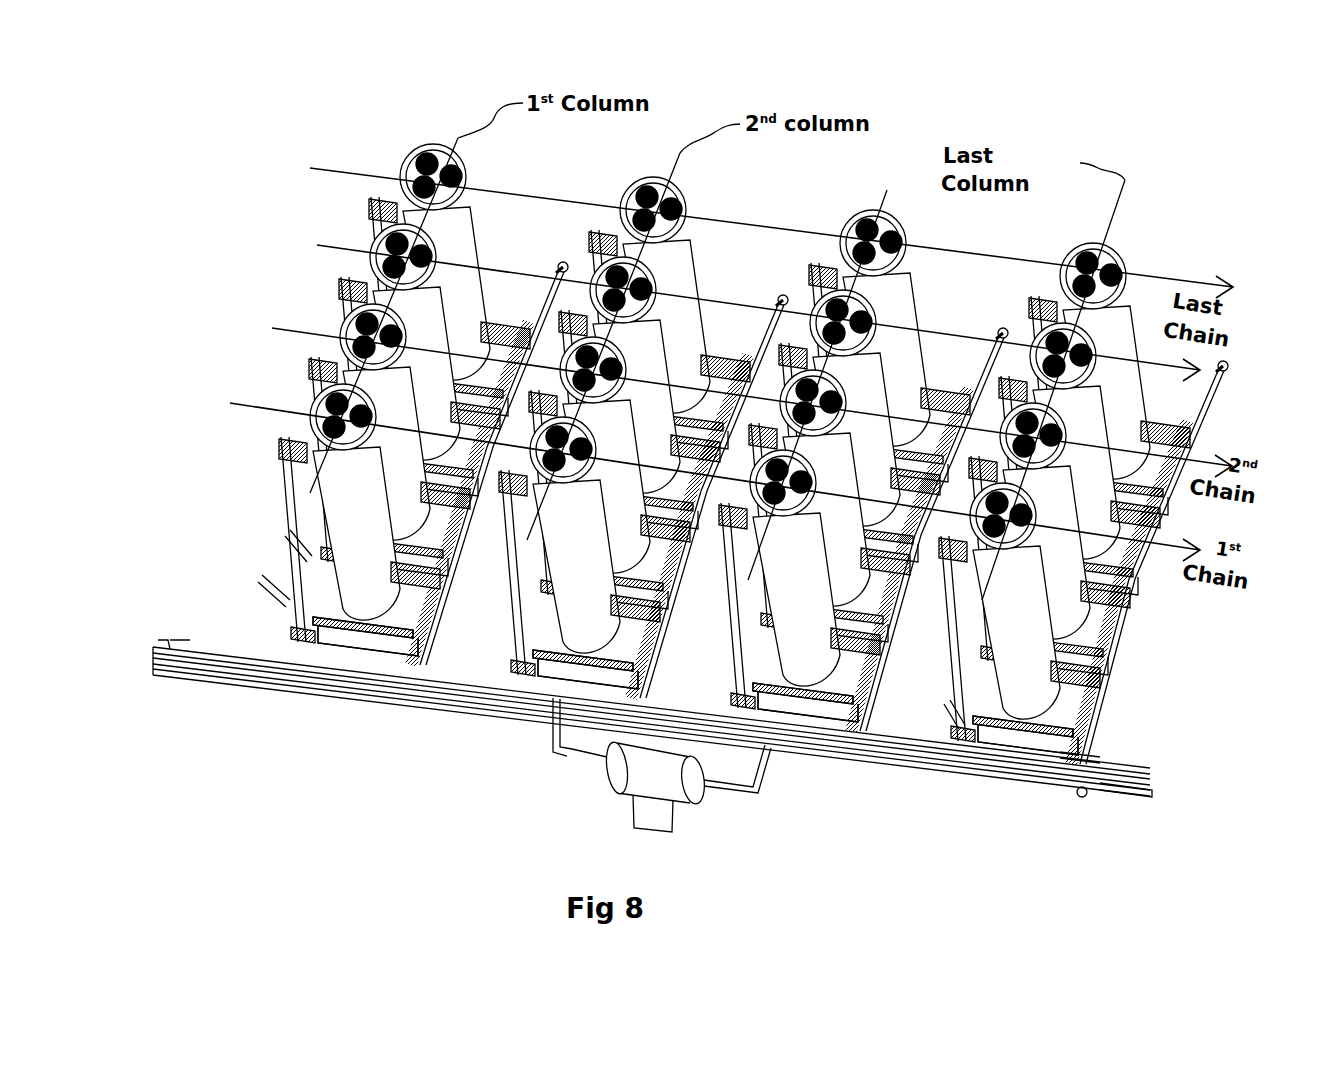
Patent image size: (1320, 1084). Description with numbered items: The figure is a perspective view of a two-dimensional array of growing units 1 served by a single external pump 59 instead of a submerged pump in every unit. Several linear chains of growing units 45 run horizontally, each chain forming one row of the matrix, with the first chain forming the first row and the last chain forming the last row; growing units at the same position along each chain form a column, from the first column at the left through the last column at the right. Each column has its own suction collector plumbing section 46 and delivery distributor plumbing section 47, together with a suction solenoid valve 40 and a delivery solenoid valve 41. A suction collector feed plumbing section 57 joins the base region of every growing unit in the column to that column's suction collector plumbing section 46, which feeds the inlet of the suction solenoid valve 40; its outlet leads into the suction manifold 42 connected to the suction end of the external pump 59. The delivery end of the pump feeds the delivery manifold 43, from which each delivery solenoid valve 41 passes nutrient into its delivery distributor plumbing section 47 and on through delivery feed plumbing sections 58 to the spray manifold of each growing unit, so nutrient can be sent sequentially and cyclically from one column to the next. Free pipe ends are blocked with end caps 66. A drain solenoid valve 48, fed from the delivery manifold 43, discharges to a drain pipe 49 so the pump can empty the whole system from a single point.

The growing unit 1 is at (487, 217).
The suction solenoid valve 40 is at (433, 610).
The delivery solenoid valve 41 is at (277, 593).
The suction manifold 42 is at (345, 660).
The delivery manifold 43 is at (345, 680).
The chain of growing units 45 is at (310, 170).
The suction collector plumbing section 46 is at (475, 540).
The delivery distributor plumbing section 47 is at (307, 533).
The drain solenoid valve 48 is at (1085, 792).
The drain pipe 49 is at (1155, 808).
The suction collector feed plumbing section 57 is at (637, 613).
The delivery feed plumbing section 58 is at (283, 477).
The external pump 59 is at (648, 772).
The end cap 66 is at (783, 300).